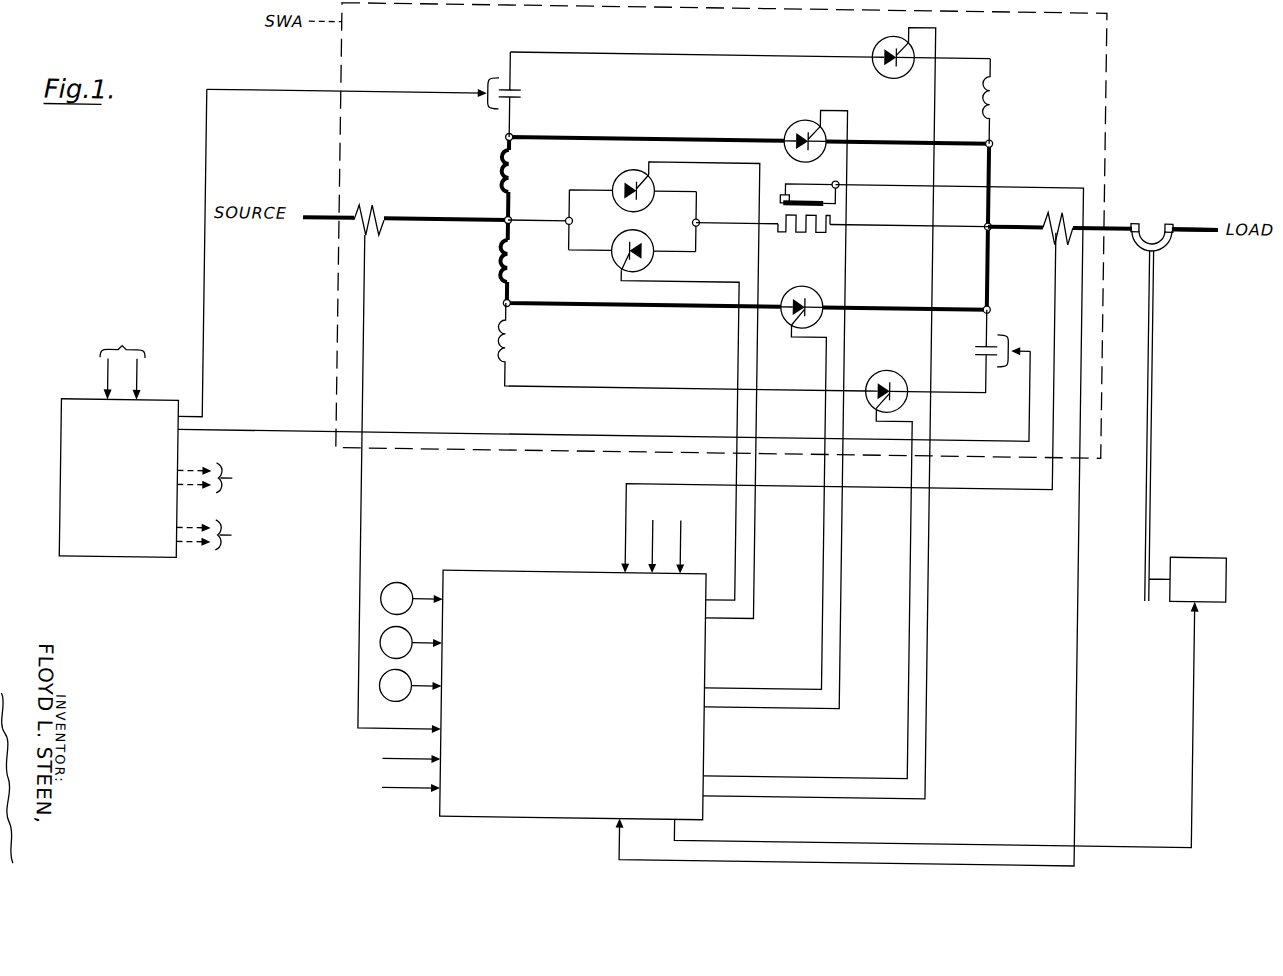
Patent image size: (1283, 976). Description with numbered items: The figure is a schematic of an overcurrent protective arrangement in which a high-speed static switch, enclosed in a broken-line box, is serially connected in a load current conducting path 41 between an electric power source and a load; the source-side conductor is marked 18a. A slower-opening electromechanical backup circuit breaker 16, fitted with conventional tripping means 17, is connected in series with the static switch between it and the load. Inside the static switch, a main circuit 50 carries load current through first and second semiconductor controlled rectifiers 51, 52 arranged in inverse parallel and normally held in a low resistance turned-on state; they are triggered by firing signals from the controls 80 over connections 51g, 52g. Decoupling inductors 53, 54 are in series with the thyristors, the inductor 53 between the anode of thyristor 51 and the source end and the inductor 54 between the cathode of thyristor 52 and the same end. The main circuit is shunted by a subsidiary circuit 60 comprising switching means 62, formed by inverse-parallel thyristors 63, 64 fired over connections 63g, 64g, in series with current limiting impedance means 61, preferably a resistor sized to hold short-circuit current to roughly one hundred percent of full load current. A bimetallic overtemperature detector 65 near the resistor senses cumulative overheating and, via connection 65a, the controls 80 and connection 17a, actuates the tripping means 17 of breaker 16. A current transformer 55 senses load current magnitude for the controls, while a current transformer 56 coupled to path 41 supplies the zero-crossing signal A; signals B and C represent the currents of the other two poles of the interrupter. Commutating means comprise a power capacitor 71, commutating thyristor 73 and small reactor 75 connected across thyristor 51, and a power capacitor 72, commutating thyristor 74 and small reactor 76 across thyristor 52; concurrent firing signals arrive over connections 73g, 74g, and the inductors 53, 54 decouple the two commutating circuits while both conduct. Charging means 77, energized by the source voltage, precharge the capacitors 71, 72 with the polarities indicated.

The backup circuit breaker 16 is at (1172, 241).
The tripping means 17 is at (1203, 548).
The connection 17a is at (1202, 772).
The source conductor 18a is at (319, 225).
The load current conducting path 41 is at (1195, 217).
The main circuit 50 is at (994, 158).
The first semiconductor controlled rectifier 51 is at (788, 123).
The connection 51g is at (846, 652).
The second semiconductor controlled rectifier 52 is at (793, 284).
The connection 52g is at (828, 652).
The decoupling inductor 53 is at (500, 168).
The decoupling inductor 54 is at (500, 268).
The current transformer 55 is at (369, 208).
The current transformer 56 is at (1047, 213).
The subsidiary circuit 60 is at (892, 219).
The current limiting impedance means 61 is at (800, 229).
The switching means 62 is at (604, 220).
The thyristor 63 is at (617, 176).
The connection 63g is at (759, 550).
The thyristor 64 is at (617, 262).
The connection 64g is at (740, 552).
The bimetallic overtemperature detector 65 is at (811, 196).
The connection 65a is at (1083, 656).
The power capacitor 71 is at (522, 93).
The power capacitor 72 is at (976, 345).
The commutating thyristor 73 is at (875, 42).
The connection 73g is at (933, 744).
The commutating thyristor 74 is at (881, 366).
The connection 74g is at (915, 745).
The small reactor 75 is at (992, 92).
The small reactor 76 is at (499, 352).
The charging means 77 is at (64, 425).
The controls 80 is at (562, 571).